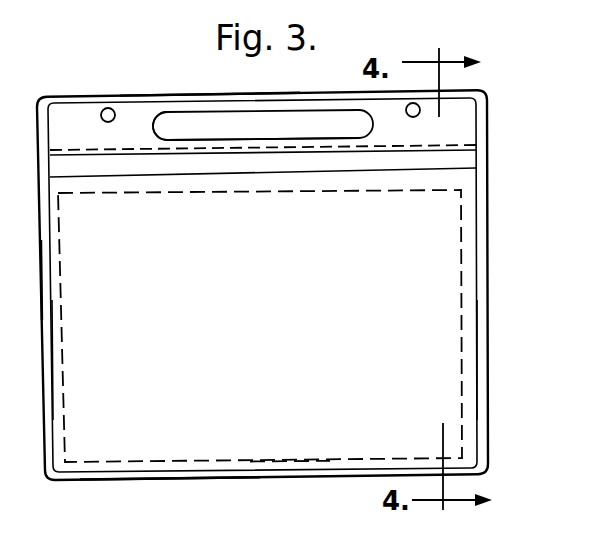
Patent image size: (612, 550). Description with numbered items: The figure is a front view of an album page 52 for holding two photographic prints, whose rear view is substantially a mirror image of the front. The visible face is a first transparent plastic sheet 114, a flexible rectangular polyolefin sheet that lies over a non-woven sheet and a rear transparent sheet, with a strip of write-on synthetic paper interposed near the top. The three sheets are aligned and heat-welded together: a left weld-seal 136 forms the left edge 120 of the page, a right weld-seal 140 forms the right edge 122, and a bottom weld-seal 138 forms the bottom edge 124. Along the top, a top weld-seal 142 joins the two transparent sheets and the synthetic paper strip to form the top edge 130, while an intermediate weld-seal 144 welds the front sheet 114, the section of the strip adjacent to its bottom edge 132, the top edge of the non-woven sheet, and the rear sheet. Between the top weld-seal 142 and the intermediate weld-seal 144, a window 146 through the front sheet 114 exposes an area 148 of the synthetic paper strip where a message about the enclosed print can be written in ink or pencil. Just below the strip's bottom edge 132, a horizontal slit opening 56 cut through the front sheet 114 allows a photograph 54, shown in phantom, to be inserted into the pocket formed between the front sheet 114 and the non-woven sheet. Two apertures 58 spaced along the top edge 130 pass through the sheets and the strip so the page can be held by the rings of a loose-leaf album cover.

The album page 52 is at (110, 87).
The top edge 130 is at (152, 97).
The window 146 is at (193, 118).
The top weld-seal 142 is at (280, 108).
The exposed area 148 is at (281, 136).
The intermediate weld-seal 144 is at (440, 141).
The slit opening 56 is at (440, 171).
The apertures 58 is at (113, 122).
The bottom edge of synthetic paper strip 132 is at (90, 157).
The photographic print 54 is at (228, 198).
The first transparent plastic sheet 114 is at (319, 314).
The left edge 120 is at (33, 281).
The right edge 122 is at (487, 302).
The left weld-seal 136 is at (52, 357).
The right weld-seal 140 is at (478, 367).
The bottom edge 124 is at (140, 484).
The bottom weld-seal 138 is at (306, 462).